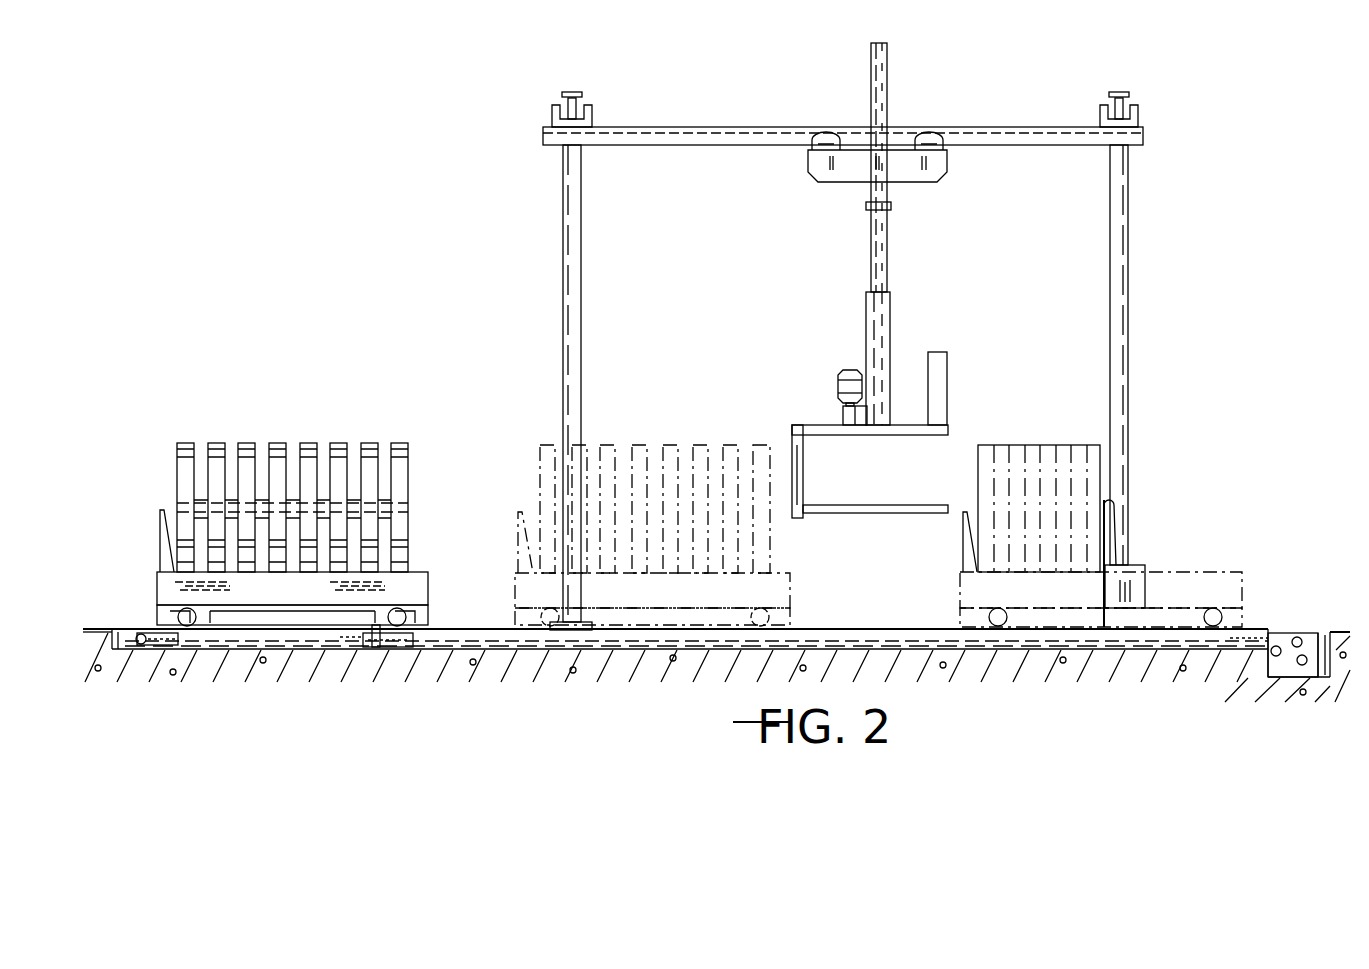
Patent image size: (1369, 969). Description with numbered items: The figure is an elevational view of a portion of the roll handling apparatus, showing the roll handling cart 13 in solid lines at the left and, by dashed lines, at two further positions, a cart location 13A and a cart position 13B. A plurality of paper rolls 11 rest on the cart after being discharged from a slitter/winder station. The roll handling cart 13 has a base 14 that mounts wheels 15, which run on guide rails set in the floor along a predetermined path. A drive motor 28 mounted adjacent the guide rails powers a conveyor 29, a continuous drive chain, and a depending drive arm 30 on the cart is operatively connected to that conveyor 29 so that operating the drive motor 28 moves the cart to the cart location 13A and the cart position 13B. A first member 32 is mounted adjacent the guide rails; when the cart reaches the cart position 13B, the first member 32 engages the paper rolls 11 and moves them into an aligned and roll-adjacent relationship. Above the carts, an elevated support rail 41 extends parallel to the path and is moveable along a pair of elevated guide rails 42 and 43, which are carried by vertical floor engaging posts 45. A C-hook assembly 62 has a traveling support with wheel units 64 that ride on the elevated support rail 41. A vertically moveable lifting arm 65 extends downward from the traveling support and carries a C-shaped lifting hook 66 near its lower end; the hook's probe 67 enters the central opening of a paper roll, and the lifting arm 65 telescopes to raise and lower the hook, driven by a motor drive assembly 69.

The paper rolls 11 is at (1032, 440).
The roll handling cart 13 is at (321, 595).
The cart location 13A is at (790, 600).
The cart position 13B is at (960, 598).
The base 14 is at (291, 608).
The wheels 15 is at (187, 628).
The drive motor 28 is at (1316, 645).
The conveyor 29 is at (142, 632).
The drive arm 30 is at (370, 642).
The first member 32 is at (1115, 520).
The elevated support rail 41 is at (1035, 127).
The elevated guide rail 42 is at (571, 92).
The elevated guide rail 43 is at (1119, 92).
The vertical floor engaging posts 45 is at (582, 321).
The C-hook assembly 62 is at (893, 220).
The wheel units 64 is at (825, 130).
The lifting arm 65 is at (890, 310).
The C-shaped lifting hook 66 is at (803, 468).
The probe 67 is at (893, 505).
The motor drive assembly 69 is at (838, 383).